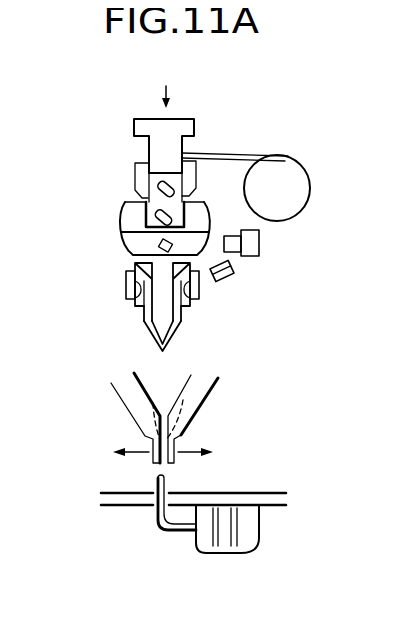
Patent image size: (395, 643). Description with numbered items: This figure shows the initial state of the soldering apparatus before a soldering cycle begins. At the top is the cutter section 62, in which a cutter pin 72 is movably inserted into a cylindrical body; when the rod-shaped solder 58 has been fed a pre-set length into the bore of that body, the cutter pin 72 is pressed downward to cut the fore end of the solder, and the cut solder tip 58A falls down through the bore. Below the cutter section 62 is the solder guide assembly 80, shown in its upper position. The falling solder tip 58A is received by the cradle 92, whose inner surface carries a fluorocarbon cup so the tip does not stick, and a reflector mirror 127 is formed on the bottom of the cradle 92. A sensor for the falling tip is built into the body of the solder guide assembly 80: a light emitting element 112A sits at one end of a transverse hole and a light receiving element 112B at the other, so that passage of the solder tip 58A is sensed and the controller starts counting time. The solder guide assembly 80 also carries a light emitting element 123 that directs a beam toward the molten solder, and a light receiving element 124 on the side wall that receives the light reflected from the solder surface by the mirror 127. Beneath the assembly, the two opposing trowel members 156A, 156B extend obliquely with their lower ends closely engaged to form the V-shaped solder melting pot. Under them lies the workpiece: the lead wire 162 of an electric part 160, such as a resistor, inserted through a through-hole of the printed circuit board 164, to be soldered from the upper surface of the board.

The cutter section 62 is at (125, 123).
The cutter pin 72 is at (190, 119).
The solder tip 58A is at (143, 172).
The rod-shaped solder 58 is at (247, 155).
The cradle 92 is at (157, 191).
The reflector mirror 127 is at (160, 246).
The light receiving element 124 is at (258, 245).
The light emitting element 123 is at (232, 276).
The light receiving element 112B is at (125, 288).
The light emitting element 112A is at (199, 290).
The solder guide assembly 80 is at (128, 325).
The trowel member 156A is at (120, 401).
The trowel member 156B is at (214, 392).
The lead wire 162 is at (165, 488).
The printed circuit board 164 is at (283, 493).
The electric part 160 is at (245, 554).